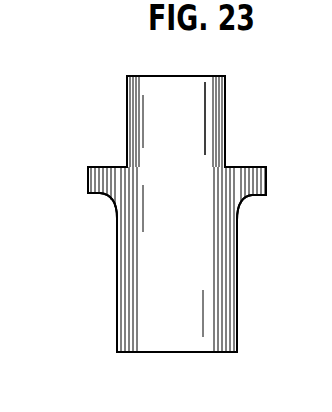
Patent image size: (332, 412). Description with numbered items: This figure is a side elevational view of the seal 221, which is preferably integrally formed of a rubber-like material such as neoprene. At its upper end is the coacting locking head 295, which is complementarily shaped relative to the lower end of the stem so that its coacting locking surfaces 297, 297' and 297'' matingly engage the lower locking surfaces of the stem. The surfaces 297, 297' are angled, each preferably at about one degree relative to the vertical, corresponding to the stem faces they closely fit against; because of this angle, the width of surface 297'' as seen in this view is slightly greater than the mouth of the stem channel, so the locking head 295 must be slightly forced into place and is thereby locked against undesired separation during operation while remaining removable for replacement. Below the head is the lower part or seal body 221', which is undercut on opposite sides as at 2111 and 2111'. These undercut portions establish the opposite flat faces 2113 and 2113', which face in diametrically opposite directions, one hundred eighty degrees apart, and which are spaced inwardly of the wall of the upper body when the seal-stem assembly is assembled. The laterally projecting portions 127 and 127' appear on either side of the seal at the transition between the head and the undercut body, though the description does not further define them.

The coacting locking surface 297 is at (161, 214).
The coacting locking surface 297'' is at (156, 60).
The coacting locking surface 297' is at (265, 121).
The coacting locking head 295 is at (197, 95).
The flange 127 is at (73, 179).
The flange (opposite side) 127' is at (275, 178).
The undercut 2111 is at (67, 215).
The undercut 2111' is at (281, 216).
The flat face 2113 is at (82, 259).
The flat face 2113' is at (251, 259).
The seal 221 is at (33, 94).
The seal body 221' is at (82, 326).